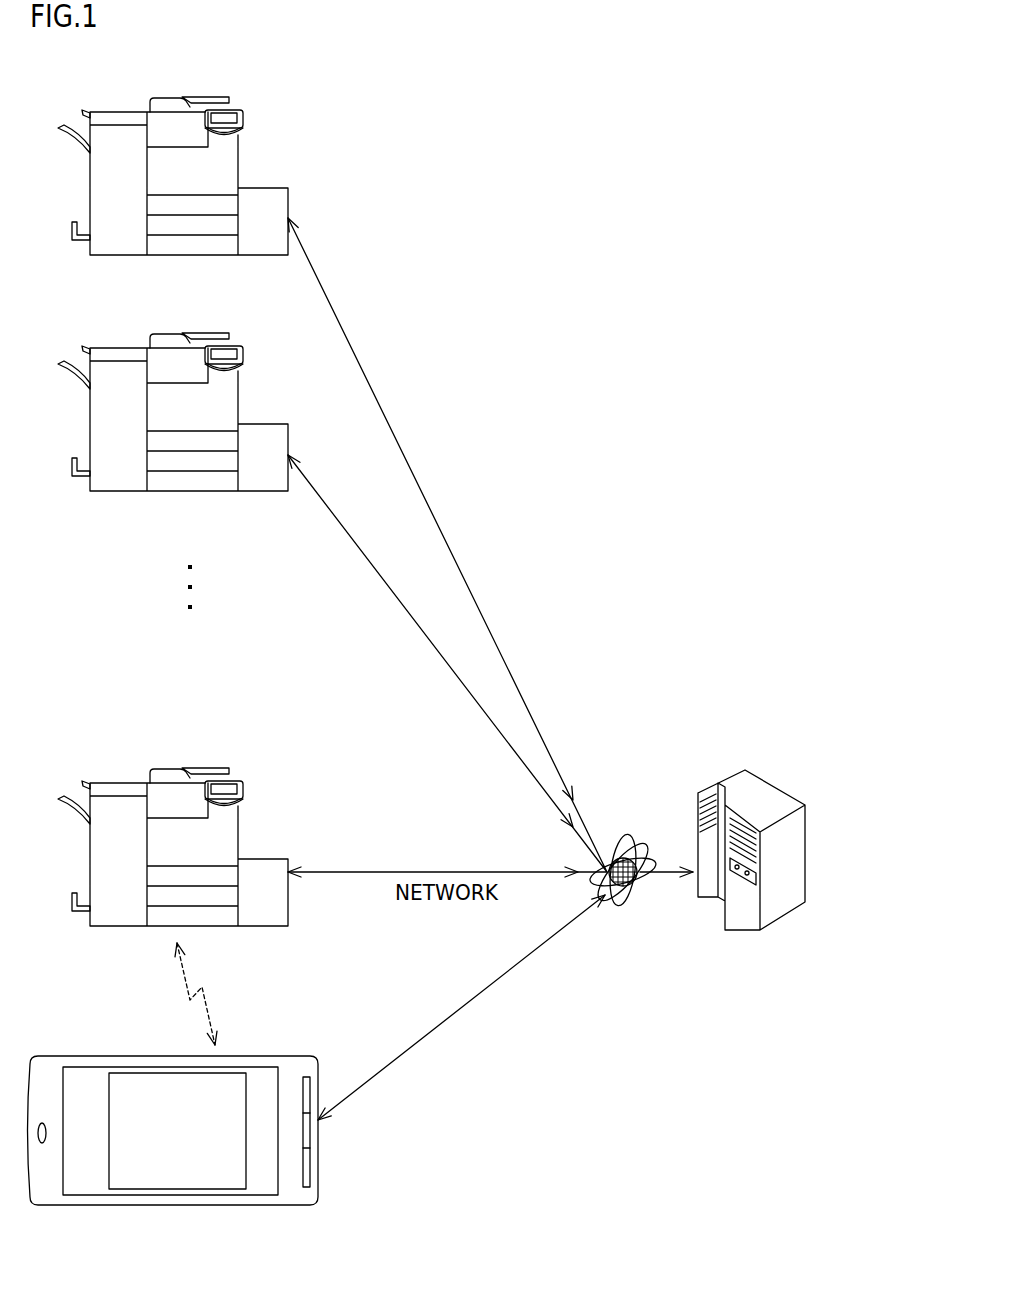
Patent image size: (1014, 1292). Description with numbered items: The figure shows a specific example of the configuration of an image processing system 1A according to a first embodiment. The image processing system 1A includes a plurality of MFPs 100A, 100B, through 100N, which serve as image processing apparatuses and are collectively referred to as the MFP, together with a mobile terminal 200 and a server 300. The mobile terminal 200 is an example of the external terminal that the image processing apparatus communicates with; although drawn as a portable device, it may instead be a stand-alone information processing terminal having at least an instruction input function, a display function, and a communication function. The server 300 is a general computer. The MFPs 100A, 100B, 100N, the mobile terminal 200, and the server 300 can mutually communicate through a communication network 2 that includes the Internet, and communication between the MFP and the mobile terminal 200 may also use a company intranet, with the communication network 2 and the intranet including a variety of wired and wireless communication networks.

The image processing system 1A is at (756, 195).
The MFP 100A is at (116, 110).
The MFP 100B is at (116, 346).
The MFP 100N is at (116, 781).
The communication network 2 is at (627, 843).
The mobile terminal 200 is at (89, 1207).
The server 300 is at (773, 783).